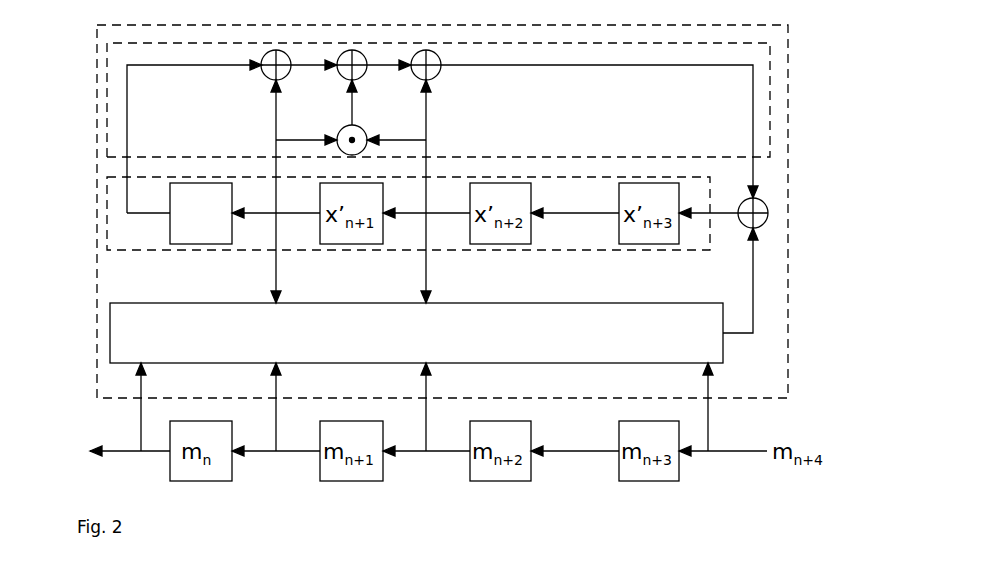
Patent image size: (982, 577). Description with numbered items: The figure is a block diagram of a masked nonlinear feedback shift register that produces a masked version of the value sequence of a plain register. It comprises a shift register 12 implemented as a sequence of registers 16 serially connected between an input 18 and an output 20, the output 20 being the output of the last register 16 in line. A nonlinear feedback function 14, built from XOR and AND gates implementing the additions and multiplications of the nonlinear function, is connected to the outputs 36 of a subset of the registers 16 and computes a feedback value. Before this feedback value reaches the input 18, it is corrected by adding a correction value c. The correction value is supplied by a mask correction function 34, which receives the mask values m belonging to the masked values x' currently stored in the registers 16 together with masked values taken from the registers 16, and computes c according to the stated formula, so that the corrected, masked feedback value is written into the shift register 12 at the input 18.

The shift register 12 is at (105, 212).
The nonlinear feedback function 14 is at (105, 102).
The register 16 is at (170, 236).
The input 18 is at (722, 215).
The output 20 is at (125, 172).
The mask correction function 34 is at (723, 349).
The outputs of registers 36 is at (786, 189).